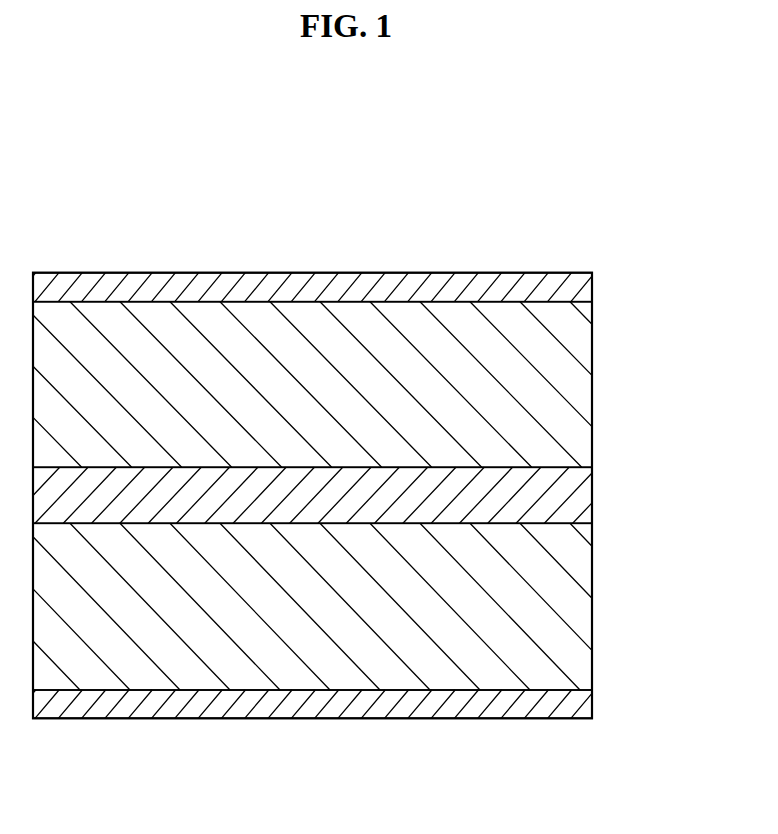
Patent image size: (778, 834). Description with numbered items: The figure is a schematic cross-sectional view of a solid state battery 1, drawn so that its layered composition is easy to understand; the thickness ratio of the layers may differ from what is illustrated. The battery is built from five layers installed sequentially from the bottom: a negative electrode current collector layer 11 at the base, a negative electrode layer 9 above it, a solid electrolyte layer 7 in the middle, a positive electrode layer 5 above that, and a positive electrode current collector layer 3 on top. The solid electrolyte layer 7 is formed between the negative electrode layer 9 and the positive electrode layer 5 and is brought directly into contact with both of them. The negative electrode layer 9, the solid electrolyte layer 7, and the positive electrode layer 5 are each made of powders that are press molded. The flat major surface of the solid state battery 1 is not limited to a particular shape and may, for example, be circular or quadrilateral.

The solid state battery 1 is at (62, 187).
The positive electrode current collector layer 3 is at (580, 285).
The positive electrode layer 5 is at (580, 387).
The solid electrolyte layer 7 is at (580, 492).
The negative electrode layer 9 is at (580, 608).
The negative electrode current collector layer 11 is at (580, 700).